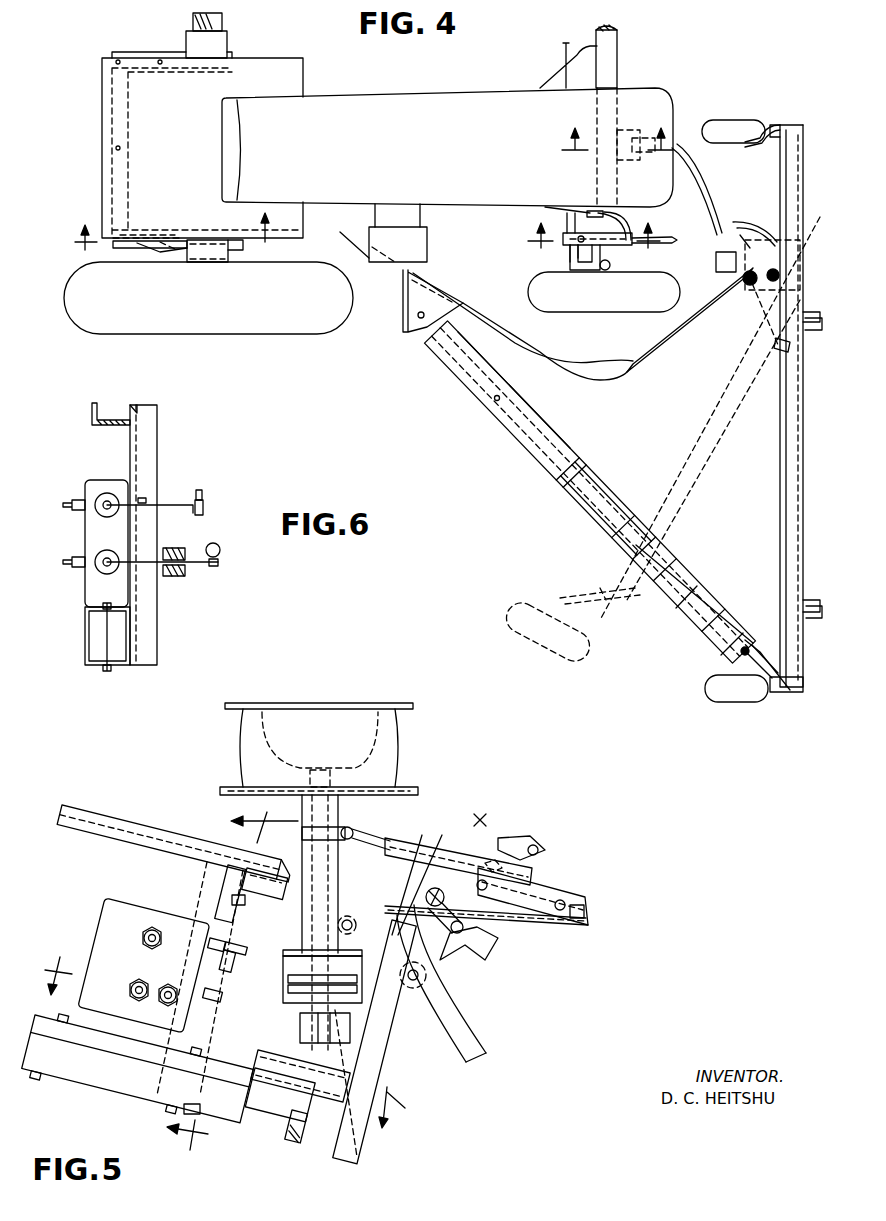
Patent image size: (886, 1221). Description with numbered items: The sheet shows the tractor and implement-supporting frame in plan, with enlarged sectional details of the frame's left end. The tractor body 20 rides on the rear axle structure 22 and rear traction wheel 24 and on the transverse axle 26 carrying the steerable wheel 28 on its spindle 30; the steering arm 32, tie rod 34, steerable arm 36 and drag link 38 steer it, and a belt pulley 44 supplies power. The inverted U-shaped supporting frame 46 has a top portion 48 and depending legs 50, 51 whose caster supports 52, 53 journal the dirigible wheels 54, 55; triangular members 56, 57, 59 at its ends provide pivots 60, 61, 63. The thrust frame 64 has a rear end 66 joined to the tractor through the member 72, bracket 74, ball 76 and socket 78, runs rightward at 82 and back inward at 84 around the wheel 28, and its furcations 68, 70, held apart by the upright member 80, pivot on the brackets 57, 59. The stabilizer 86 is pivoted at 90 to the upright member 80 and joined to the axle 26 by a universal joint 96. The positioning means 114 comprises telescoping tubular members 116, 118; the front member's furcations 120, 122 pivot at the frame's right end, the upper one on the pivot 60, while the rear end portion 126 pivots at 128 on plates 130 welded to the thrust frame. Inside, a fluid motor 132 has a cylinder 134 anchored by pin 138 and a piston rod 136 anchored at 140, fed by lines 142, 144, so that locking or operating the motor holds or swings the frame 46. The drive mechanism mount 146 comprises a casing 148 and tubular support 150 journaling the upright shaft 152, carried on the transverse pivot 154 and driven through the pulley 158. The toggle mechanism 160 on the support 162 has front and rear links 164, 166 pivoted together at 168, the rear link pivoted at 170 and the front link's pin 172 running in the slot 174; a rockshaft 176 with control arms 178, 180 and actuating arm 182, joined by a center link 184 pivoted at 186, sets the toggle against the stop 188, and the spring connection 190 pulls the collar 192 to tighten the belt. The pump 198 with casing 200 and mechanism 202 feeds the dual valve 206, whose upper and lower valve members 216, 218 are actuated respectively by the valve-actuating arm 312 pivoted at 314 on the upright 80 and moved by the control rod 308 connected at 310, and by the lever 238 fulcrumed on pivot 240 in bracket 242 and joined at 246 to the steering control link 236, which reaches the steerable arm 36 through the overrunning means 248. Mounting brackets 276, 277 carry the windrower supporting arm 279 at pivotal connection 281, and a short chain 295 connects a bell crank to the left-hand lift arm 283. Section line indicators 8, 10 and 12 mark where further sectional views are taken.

In FIG. 4, the section line 8 is at (617, 156).
In FIG. 4, the section line 10 is at (594, 246).
In FIG. 4, the section line 12 is at (175, 227).
In FIG. 4, the tractor body 20 is at (455, 97).
In FIG. 4, the rear axle structure 22 is at (227, 40).
In FIG. 4, the right-hand rear traction wheel 24 is at (252, 335).
In FIG. 4, the transverse axle 26 is at (617, 50).
In FIG. 4, the right-hand steerable wheel 28 is at (530, 291).
In FIG. 4, the upright spindle 30 is at (606, 270).
In FIG. 4, the steering arm 32 is at (579, 258).
In FIG. 4, the tie rod 34 is at (562, 53).
In FIG. 4, the steerable arm 36 is at (614, 225).
In FIG. 4, the drag link 38 is at (586, 210).
In FIG. 4, the belt pulley 44 is at (427, 236).
In FIG. 4, the implement-supporting frame 46 is at (778, 486).
In FIG. 5, the implement-supporting frame 46 is at (368, 1024).
In FIG. 4, the top portion 48 is at (780, 516).
In FIG. 5, the top portion 48 is at (396, 858).
In FIG. 4, the right depending leg 50 is at (786, 692).
In FIG. 4, the left depending leg 51 is at (780, 122).
In FIG. 5, the left depending leg 51 is at (369, 993).
In FIG. 4, the right caster support 52 is at (771, 693).
In FIG. 4, the left caster support 53 is at (766, 129).
In FIG. 5, the left caster support 53 is at (301, 1143).
In FIG. 4, the right dirigible wheel 54 is at (725, 690).
In FIG. 4, the left dirigible wheel 55 is at (721, 122).
In FIG. 4, the upper triangular member 56 is at (757, 690).
In FIG. 4, the left-hand upper triangular bracket 57 is at (776, 240).
In FIG. 5, the left-hand upper triangular bracket 57 is at (294, 868).
In FIG. 5, the left-hand lower triangular bracket 59 is at (281, 1106).
In FIG. 4, the upper pivot 60 is at (747, 655).
In FIG. 4, the left-hand upper pivot 61 is at (748, 303).
In FIG. 5, the left-hand upper pivot 61 is at (230, 898).
In FIG. 5, the left-hand lower pivot 63 is at (200, 1117).
In FIG. 4, the thrust frame 64 is at (598, 379).
In FIG. 6, the thrust frame 64 is at (83, 660).
In FIG. 5, the thrust frame 64 is at (88, 839).
In FIG. 4, the rear end 66 is at (177, 253).
In FIG. 4, the upper furcation 68 is at (719, 334).
In FIG. 6, the upper furcation 68 is at (85, 643).
In FIG. 5, the upper furcation 68 is at (86, 1074).
In FIG. 4, the lower furcation 70 is at (679, 356).
In FIG. 6, the lower furcation 70 is at (91, 406).
In FIG. 5, the lower furcation 70 is at (116, 823).
In FIG. 4, the rearwardly extending member 72 is at (121, 250).
In FIG. 4, the depending bracket 74 is at (171, 241).
In FIG. 4, the ball 76 is at (149, 238).
In FIG. 4, the socket 78 is at (146, 253).
In FIG. 6, the upright member 80 is at (151, 412).
In FIG. 5, the upright member 80 is at (210, 872).
In FIG. 4, the offset portion 82 is at (531, 346).
In FIG. 4, the inward portion 84 is at (724, 323).
In FIG. 4, the stabilizer 86 is at (703, 157).
In FIG. 4, the pivot 90 is at (716, 262).
In FIG. 4, the universal joint 96 is at (644, 138).
In FIG. 4, the positioning means 114 is at (527, 444).
In FIG. 4, the first tubular member 116 is at (460, 372).
In FIG. 4, the second tubular member 118 is at (706, 593).
In FIG. 4, the forward end 120 is at (721, 645).
In FIG. 4, the upper portion 122 is at (714, 603).
In FIG. 4, the rear end portion 126 is at (434, 344).
In FIG. 4, the vertical pivot 128 is at (418, 318).
In FIG. 4, the plates 130 is at (408, 299).
In FIG. 4, the fluid motor 132 is at (624, 531).
In FIG. 4, the cylinder 134 is at (637, 533).
In FIG. 4, the piston rod 136 is at (584, 490).
In FIG. 4, the anchor pin 138 is at (738, 628).
In FIG. 4, the anchor 140 is at (495, 399).
In FIG. 4, the fluid-pressure-transmitting line 142 is at (746, 627).
In FIG. 5, the fluid-pressure-transmitting line 142 is at (137, 983).
In FIG. 4, the fluid-pressure-transmitting line 144 is at (621, 507).
In FIG. 6, the fluid-pressure-transmitting line 144 is at (74, 559).
In FIG. 5, the fluid-pressure-transmitting line 144 is at (131, 996).
In FIG. 5, the drive mechanism mount 146 is at (357, 1041).
In FIG. 5, the casing 148 is at (432, 1020).
In FIG. 5, the tubular support 150 is at (338, 803).
In FIG. 4, the drive shaft 152 is at (750, 245).
In FIG. 5, the drive shaft 152 is at (366, 1063).
In FIG. 5, the transverse pivot 154 is at (350, 922).
In FIG. 5, the input pulley 158 is at (394, 731).
In FIG. 5, the toggle mechanism 160 is at (550, 866).
In FIG. 5, the support 162 is at (588, 925).
In FIG. 5, the front link 164 is at (566, 901).
In FIG. 5, the rear link 166 is at (412, 880).
In FIG. 5, the pivot 168 is at (481, 842).
In FIG. 5, the pivot 170 is at (423, 855).
In FIG. 5, the transverse pin 172 is at (584, 907).
In FIG. 5, the slot 174 is at (557, 889).
In FIG. 5, the rockshaft 176 is at (456, 860).
In FIG. 5, the upper control arm 178 is at (532, 845).
In FIG. 5, the lower control arm 180 is at (432, 976).
In FIG. 5, the actuating arm 182 is at (470, 950).
In FIG. 5, the center link 184 is at (502, 905).
In FIG. 5, the pivot 186 is at (470, 930).
In FIG. 5, the stop 188 is at (536, 916).
In FIG. 5, the spring connection 190 is at (380, 841).
In FIG. 5, the collar 192 is at (302, 830).
In FIG. 5, the pump 198 is at (361, 1076).
In FIG. 5, the pump casing 200 is at (306, 1088).
In FIG. 5, the pump mechanism 202 is at (358, 1133).
In FIG. 6, the valve 206 is at (104, 478).
In FIG. 5, the valve 206 is at (118, 895).
In FIG. 6, the upper valve member 216 is at (72, 503).
In FIG. 5, the upper valve member 216 is at (216, 925).
In FIG. 6, the lower valve member 218 is at (85, 567).
In FIG. 5, the lower valve member 218 is at (200, 1010).
In FIG. 4, the second control member 236 is at (668, 238).
In FIG. 6, the second control member 236 is at (220, 551).
In FIG. 6, the valve-actuating lever 238 is at (216, 566).
In FIG. 5, the valve-actuating lever 238 is at (168, 987).
In FIG. 6, the upright pivot 240 is at (174, 548).
In FIG. 6, the bracket 242 is at (179, 578).
In FIG. 5, the bracket 242 is at (238, 986).
In FIG. 6, the pivotal connection 246 is at (219, 565).
In FIG. 4, the overrunning means 248 is at (573, 262).
In FIG. 4, the right-hand mounting bracket 276 is at (820, 618).
In FIG. 4, the left-hand mounting bracket 277 is at (818, 330).
In FIG. 5, the left-hand mounting bracket 277 is at (347, 1153).
In FIG. 5, the left-hand supporting arm 279 is at (477, 1057).
In FIG. 5, the pivotal connection 281 is at (420, 982).
In FIG. 5, the left-hand lift arm 283 is at (546, 849).
In FIG. 5, the short chain 295 is at (511, 840).
In FIG. 6, the control rod 308 is at (201, 491).
In FIG. 6, the pivotal connection 310 is at (203, 509).
In FIG. 6, the valve-actuating arm 312 is at (178, 505).
In FIG. 5, the valve-actuating arm 312 is at (234, 962).
In FIG. 6, the vertical pivot 314 is at (144, 498).
In FIG. 5, the vertical pivot 314 is at (238, 946).